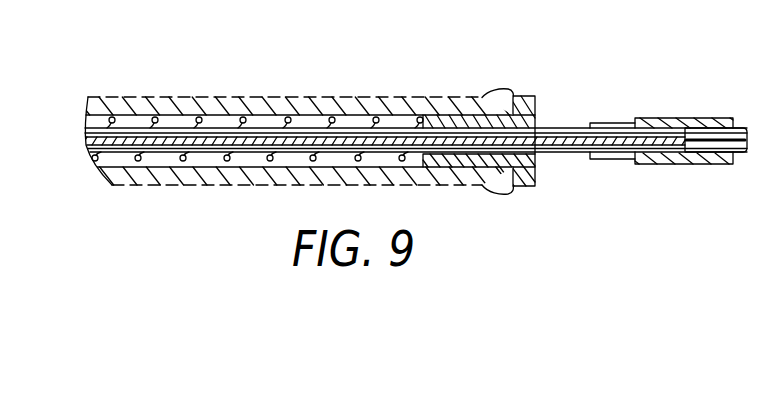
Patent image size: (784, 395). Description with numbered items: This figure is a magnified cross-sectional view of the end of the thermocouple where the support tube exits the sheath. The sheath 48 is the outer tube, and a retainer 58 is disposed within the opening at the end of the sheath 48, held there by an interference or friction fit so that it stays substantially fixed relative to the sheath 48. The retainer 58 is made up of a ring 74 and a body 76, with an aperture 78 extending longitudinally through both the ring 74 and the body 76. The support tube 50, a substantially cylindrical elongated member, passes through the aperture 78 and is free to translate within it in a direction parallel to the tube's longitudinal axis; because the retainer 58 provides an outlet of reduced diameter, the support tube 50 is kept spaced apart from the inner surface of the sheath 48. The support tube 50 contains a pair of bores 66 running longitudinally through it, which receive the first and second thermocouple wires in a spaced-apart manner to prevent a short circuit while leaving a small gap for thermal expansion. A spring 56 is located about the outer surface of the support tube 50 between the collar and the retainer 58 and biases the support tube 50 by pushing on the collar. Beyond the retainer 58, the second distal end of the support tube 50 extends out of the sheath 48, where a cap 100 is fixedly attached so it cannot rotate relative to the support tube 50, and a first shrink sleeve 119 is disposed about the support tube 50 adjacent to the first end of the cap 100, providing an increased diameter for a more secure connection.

The sheath 48 is at (300, 97).
The support tube 50 is at (87, 140).
The spring 56 is at (183, 161).
The retainer 58 is at (536, 189).
The bores 66 is at (124, 127).
The ring 74 is at (523, 103).
The body 76 is at (479, 168).
The aperture 78 is at (480, 128).
The cap 100 is at (695, 118).
The first shrink sleeve 119 is at (612, 160).